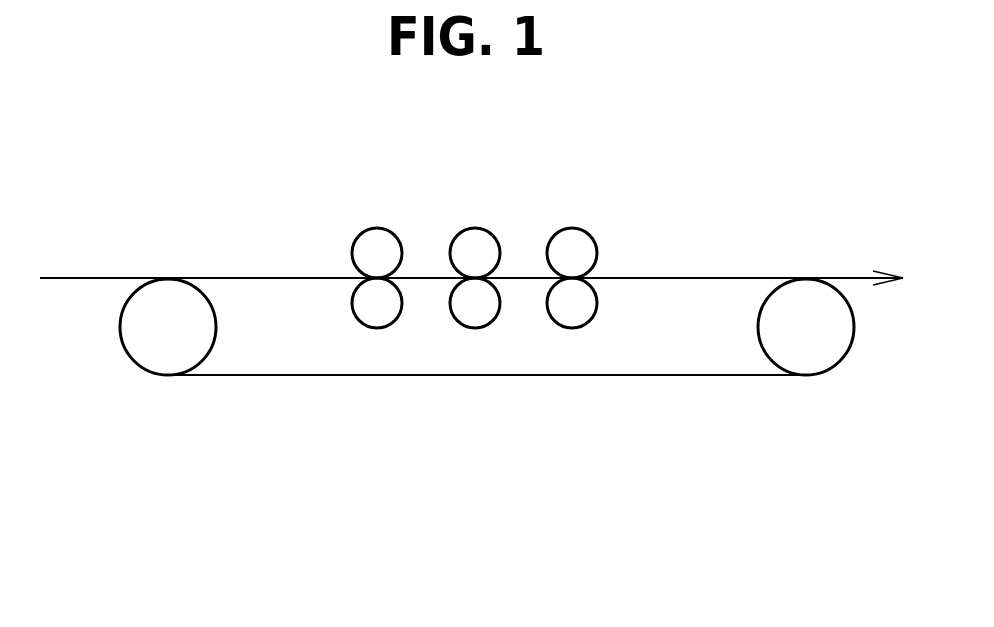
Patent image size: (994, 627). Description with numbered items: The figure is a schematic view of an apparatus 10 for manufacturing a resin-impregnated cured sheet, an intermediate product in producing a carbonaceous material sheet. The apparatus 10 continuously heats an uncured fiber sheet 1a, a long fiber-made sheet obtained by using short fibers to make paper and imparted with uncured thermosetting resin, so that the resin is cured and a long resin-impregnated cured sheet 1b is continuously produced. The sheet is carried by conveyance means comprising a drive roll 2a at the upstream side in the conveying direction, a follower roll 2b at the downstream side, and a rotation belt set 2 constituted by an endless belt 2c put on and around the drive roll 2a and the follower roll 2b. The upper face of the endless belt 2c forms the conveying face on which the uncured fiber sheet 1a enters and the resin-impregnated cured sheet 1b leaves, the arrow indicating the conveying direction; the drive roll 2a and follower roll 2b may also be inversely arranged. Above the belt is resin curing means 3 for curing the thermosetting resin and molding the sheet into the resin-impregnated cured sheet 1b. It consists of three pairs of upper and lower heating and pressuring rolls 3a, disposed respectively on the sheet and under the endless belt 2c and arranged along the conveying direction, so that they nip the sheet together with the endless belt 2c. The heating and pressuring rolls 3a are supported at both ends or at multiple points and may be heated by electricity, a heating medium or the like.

The uncured fiber sheet 1a is at (100, 278).
The resin-impregnated cured sheet 1b is at (855, 278).
The rotation belt set 2 is at (328, 385).
The drive roll 2a is at (142, 340).
The follower roll 2b is at (822, 343).
The endless belt 2c is at (452, 377).
The resin curing means 3 is at (493, 220).
The heating and pressuring rolls 3a is at (383, 228).
The apparatus for manufacturing a resin-impregnated cured sheet 10 is at (289, 224).